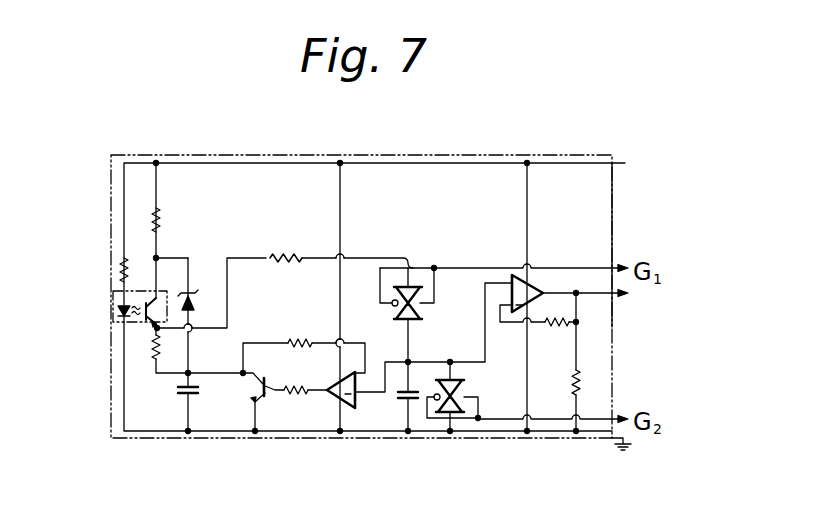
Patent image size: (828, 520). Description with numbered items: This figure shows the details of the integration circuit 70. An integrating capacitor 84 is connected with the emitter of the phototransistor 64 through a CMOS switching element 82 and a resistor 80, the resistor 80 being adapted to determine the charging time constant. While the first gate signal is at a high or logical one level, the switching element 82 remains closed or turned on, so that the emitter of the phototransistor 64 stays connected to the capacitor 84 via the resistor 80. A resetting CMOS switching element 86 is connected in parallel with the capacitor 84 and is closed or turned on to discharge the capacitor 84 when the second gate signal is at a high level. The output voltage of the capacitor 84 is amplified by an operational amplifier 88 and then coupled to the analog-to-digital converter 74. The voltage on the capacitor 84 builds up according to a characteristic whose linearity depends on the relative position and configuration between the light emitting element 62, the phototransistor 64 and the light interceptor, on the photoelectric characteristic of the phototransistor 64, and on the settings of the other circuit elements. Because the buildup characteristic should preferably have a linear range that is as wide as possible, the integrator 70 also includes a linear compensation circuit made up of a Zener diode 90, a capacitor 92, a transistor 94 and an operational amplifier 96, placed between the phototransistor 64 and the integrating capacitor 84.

The integration circuit 70 is at (567, 155).
The light emitting element 62 is at (116, 315).
The phototransistor 64 is at (149, 328).
The Zener diode 90 is at (197, 292).
The capacitor 92 is at (196, 388).
The resistor 80 is at (284, 252).
The transistor 94 is at (263, 403).
The operational amplifier 96 is at (325, 391).
The integrating capacitor 84 is at (397, 396).
The CMOS switching element 82 is at (428, 308).
The resetting CMOS switching element 86 is at (464, 386).
The operational amplifier 88 is at (542, 282).
The analog-to-digital converter 74 is at (629, 296).